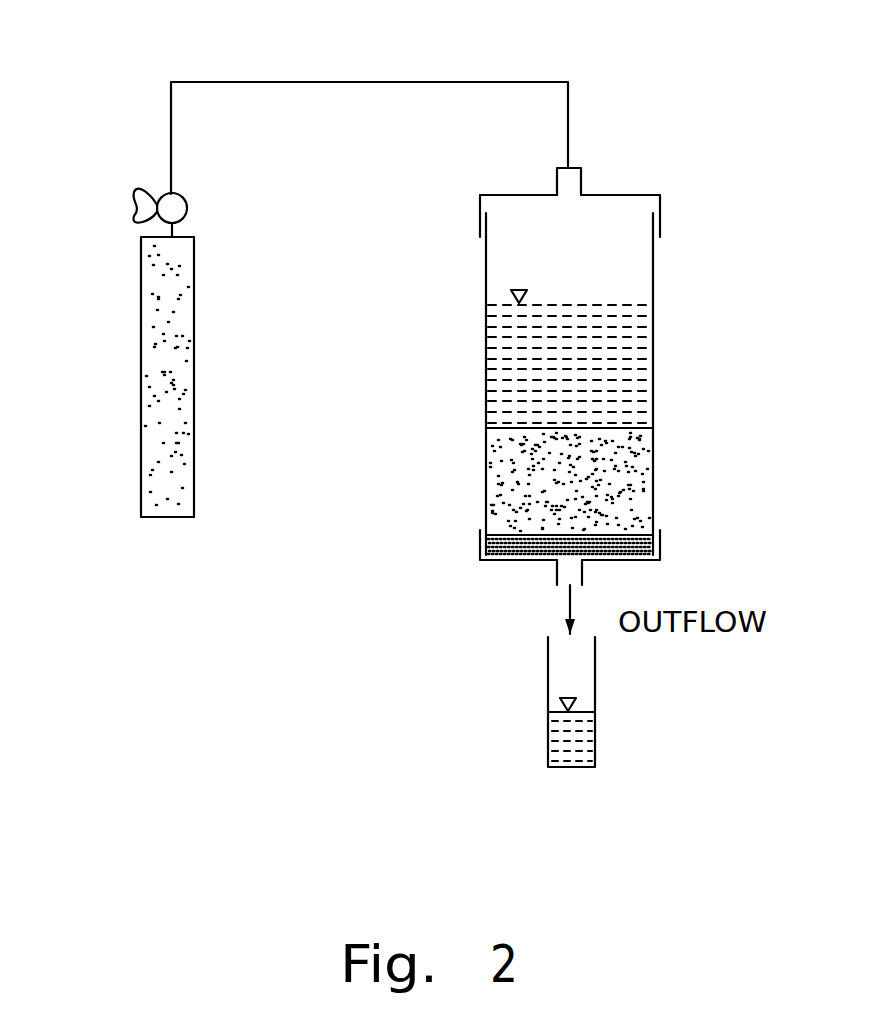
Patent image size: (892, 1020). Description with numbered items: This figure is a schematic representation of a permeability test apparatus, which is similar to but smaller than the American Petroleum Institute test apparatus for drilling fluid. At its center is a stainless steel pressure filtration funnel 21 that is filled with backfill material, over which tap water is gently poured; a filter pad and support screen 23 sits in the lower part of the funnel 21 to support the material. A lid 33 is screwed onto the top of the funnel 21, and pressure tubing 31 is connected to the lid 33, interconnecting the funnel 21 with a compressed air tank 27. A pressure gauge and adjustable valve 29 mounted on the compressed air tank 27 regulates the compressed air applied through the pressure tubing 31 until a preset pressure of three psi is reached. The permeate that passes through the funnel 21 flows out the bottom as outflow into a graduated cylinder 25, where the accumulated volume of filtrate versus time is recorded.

The stainless steel pressure filtration funnel 21 is at (680, 319).
The filter pad and support screen 23 is at (670, 537).
The graduated cylinder 25 is at (616, 707).
The compressed air tank 27 is at (141, 415).
The pressure gauge and adjustable valve 29 is at (145, 176).
The pressure tubing 31 is at (393, 82).
The lid 33 is at (620, 195).